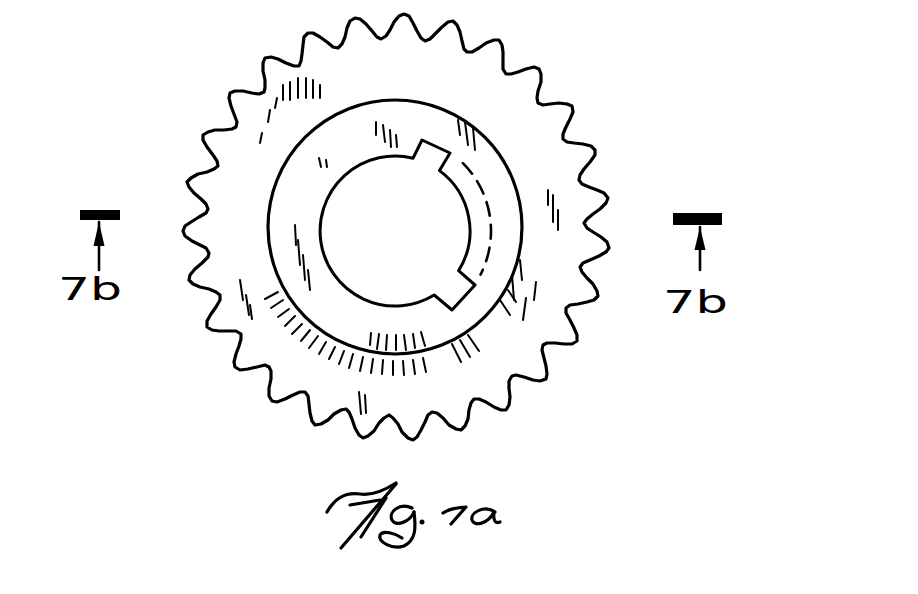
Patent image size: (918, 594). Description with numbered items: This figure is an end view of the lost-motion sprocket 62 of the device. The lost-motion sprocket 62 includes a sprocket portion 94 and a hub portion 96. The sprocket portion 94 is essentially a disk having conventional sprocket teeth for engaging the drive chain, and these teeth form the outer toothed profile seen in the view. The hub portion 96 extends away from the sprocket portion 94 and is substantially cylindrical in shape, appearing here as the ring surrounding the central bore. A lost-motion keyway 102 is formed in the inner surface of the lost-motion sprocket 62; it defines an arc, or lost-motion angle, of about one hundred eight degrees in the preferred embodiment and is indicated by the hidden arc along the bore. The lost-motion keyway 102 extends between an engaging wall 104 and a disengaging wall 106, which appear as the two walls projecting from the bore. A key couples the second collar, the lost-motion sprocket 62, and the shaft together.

The lost-motion sprocket 62 is at (445, 220).
The sprocket portion 94 is at (488, 48).
The hub portion 96 is at (318, 330).
The lost-motion keyway 102 is at (477, 207).
The engaging wall 104 is at (463, 280).
The disengaging wall 106 is at (485, 220).